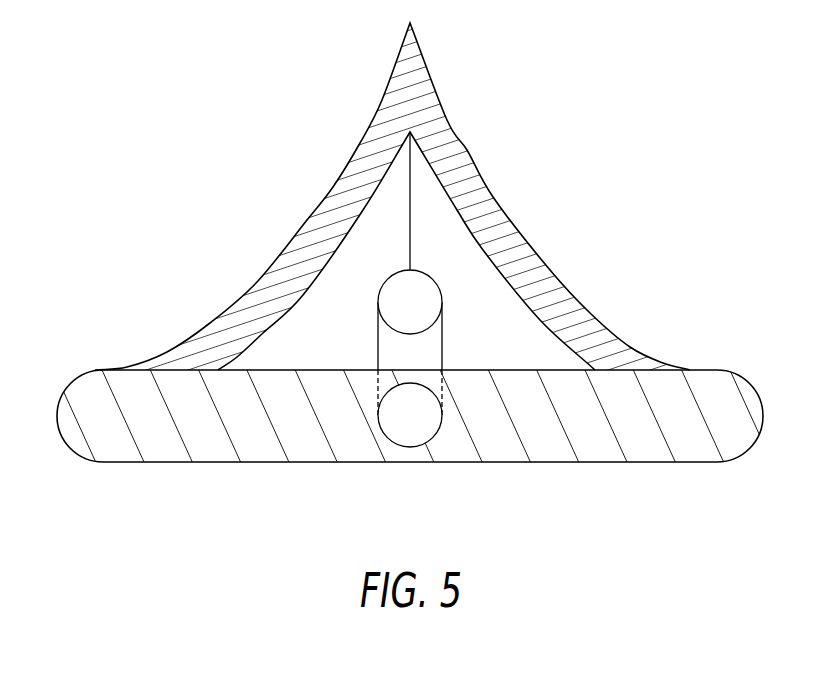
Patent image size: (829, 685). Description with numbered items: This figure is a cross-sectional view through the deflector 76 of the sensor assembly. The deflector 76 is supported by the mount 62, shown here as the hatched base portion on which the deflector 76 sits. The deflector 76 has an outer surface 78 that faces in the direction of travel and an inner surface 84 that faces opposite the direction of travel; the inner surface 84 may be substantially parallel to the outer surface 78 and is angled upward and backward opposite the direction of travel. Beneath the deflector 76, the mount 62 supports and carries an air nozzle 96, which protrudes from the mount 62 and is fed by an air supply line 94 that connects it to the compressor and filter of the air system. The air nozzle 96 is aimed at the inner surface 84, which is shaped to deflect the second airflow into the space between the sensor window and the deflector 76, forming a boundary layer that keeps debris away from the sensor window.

The mount 62 is at (652, 462).
The deflector 76 is at (460, 137).
The outer surface 78 is at (307, 235).
The inner surface 84 is at (350, 322).
The air supply lines 94 is at (410, 447).
The air nozzles 96 is at (443, 315).